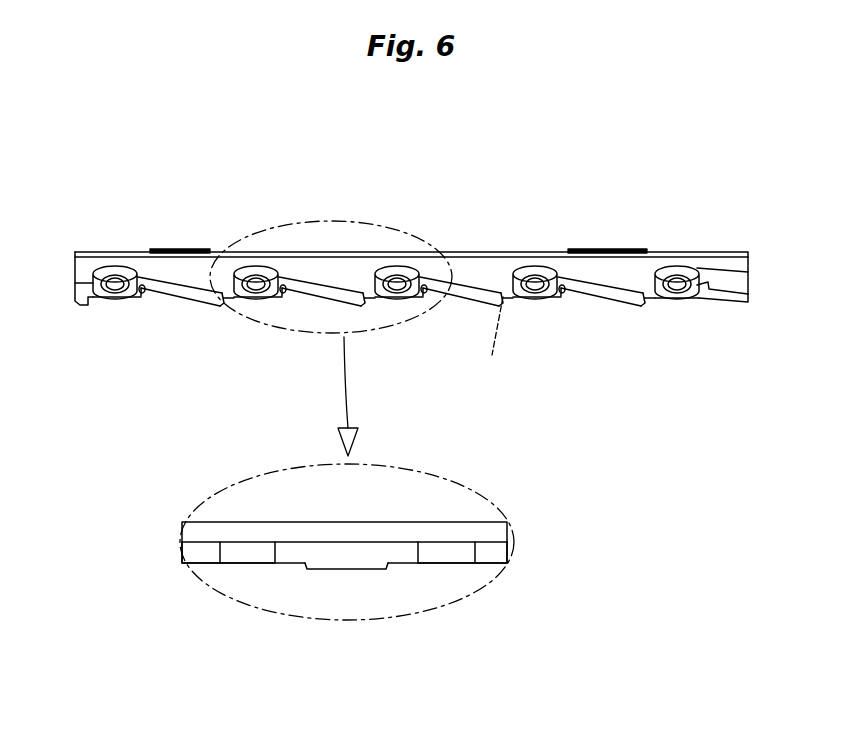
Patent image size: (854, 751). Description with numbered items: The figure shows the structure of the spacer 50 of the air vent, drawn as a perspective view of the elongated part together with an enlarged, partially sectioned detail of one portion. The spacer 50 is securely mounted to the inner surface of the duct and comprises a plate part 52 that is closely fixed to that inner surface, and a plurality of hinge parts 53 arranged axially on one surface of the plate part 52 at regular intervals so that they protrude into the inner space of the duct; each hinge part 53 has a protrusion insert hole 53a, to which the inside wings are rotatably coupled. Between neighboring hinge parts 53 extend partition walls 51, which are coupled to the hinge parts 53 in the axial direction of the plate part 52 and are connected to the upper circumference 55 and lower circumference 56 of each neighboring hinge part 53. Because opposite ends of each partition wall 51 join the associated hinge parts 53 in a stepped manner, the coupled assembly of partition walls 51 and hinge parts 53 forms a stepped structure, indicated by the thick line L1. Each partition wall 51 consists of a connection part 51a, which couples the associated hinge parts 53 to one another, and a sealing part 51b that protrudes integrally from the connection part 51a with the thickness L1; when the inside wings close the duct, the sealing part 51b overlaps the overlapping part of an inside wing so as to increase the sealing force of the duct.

The spacer 50 is at (420, 200).
The partition wall 51 is at (396, 500).
The connection part 51a is at (621, 284).
The sealing part 51b is at (567, 296).
The plate part 52 is at (311, 258).
The hinge part 53 is at (396, 405).
The protrusion insert hole 53a is at (397, 288).
The upper circumference 55 is at (415, 262).
The lower circumference 56 is at (510, 302).
The thick line / thickness L1 is at (484, 345).